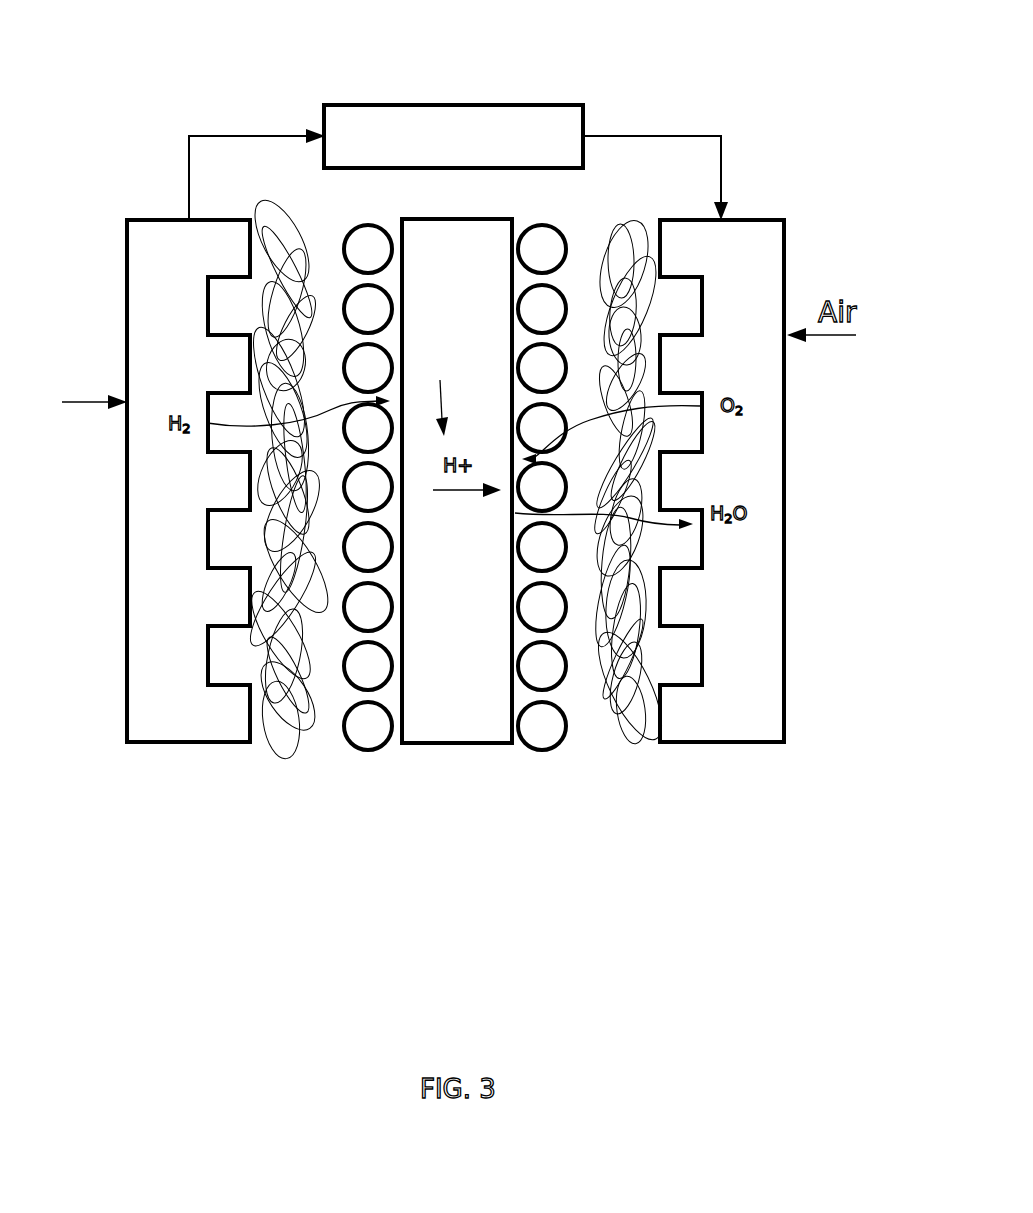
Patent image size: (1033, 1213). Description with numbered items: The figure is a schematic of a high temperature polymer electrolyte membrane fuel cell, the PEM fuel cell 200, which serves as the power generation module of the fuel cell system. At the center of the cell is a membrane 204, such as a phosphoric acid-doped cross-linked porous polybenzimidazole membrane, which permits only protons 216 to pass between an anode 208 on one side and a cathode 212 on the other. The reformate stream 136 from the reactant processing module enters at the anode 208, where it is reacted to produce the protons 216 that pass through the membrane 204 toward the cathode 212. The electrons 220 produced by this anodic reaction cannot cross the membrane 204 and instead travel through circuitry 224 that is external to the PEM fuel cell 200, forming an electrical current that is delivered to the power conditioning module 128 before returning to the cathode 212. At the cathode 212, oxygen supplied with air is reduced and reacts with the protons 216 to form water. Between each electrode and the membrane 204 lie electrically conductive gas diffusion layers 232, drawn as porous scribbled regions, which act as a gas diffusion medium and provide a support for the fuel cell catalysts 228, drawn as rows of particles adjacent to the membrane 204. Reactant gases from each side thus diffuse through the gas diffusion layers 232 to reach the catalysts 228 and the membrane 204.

The PEM fuel cell 200 is at (740, 88).
The power conditioning module 128 is at (453, 104).
The electrons 220 is at (189, 136).
The circuitry 224 is at (262, 113).
The anode 208 is at (188, 742).
The cathode 212 is at (722, 742).
The membrane 204 is at (452, 745).
The protons 216 is at (445, 394).
The fuel cell catalysts 228 is at (368, 788).
The gas diffusion layers 232 is at (288, 780).
The reformate stream 136 is at (94, 387).